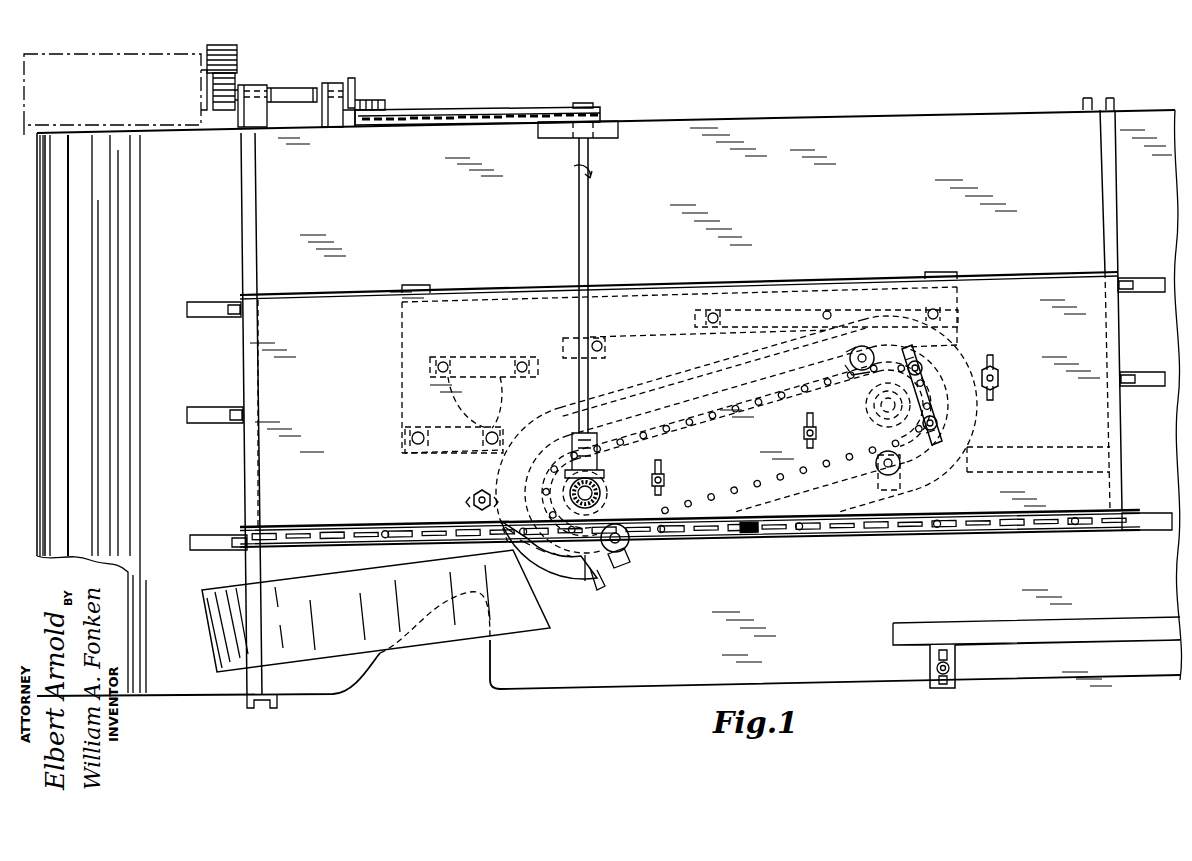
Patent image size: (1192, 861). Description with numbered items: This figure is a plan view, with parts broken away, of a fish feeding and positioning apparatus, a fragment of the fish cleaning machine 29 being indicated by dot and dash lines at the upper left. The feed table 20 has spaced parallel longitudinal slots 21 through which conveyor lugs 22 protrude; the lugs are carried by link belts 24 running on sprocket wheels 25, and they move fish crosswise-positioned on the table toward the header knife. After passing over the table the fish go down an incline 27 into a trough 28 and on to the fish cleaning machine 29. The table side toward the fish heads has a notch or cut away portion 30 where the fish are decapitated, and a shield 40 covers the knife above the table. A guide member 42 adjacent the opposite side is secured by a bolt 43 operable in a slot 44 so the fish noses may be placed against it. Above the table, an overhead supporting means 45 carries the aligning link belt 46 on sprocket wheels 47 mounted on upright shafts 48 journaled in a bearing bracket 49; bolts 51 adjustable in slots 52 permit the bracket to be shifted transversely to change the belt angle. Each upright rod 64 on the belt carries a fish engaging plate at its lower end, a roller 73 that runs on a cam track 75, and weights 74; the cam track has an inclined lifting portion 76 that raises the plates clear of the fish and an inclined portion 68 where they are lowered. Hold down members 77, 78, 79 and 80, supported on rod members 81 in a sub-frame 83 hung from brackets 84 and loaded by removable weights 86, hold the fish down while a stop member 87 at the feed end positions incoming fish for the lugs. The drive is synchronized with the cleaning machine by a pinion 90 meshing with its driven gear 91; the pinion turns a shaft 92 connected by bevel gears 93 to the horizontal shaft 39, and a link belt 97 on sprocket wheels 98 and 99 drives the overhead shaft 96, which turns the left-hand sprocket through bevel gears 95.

The feed table 20 is at (971, 118).
The longitudinal slots 21 is at (1147, 513).
The conveyor lugs 22 is at (935, 533).
The link belts 24 is at (1033, 530).
The sprocket wheels 25 is at (236, 318).
The incline 27 is at (168, 690).
The trough 28 is at (108, 472).
The fish cleaning machine 29 is at (128, 66).
The notch or cut away portion 30 is at (479, 665).
The horizontal shaft 39 is at (373, 126).
The shield 40 is at (331, 579).
The guide member 42 is at (1040, 625).
The bolt 43 is at (928, 667).
The slot 44 is at (952, 666).
The overhead supporting means 45 is at (257, 292).
The link belt 46 is at (749, 417).
The sprocket wheels 47 is at (606, 468).
The upright shafts 48 is at (651, 481).
The bearing bracket 49 is at (922, 450).
The bolts 51 is at (935, 398).
The slots 52 is at (922, 365).
The upright rod 64 is at (764, 505).
The inclined portion 68 is at (920, 486).
The roller 73 is at (673, 381).
The weights 74 is at (767, 400).
The cam track 75 is at (548, 414).
The inclined lifting portion 76 is at (576, 577).
The hold down member 77 is at (789, 318).
The hold down member 78 is at (647, 338).
The hold down member 79 is at (494, 357).
The hold down member 80 is at (463, 427).
The rod members 81 is at (478, 378).
The sub-frame 83 is at (400, 331).
The brackets 84 is at (420, 285).
The removable weights 86 is at (566, 344).
The stop member 87 is at (1045, 447).
The pinion 90 is at (222, 112).
The driven gear 91 is at (238, 60).
The shaft 92 is at (300, 88).
The bevel gears 93 is at (368, 100).
The bevel gears 95 is at (569, 476).
The overhead shaft 96 is at (589, 246).
The link belt 97 is at (468, 111).
The sprocket wheel 98 is at (594, 110).
The sprocket wheel 99 is at (352, 126).